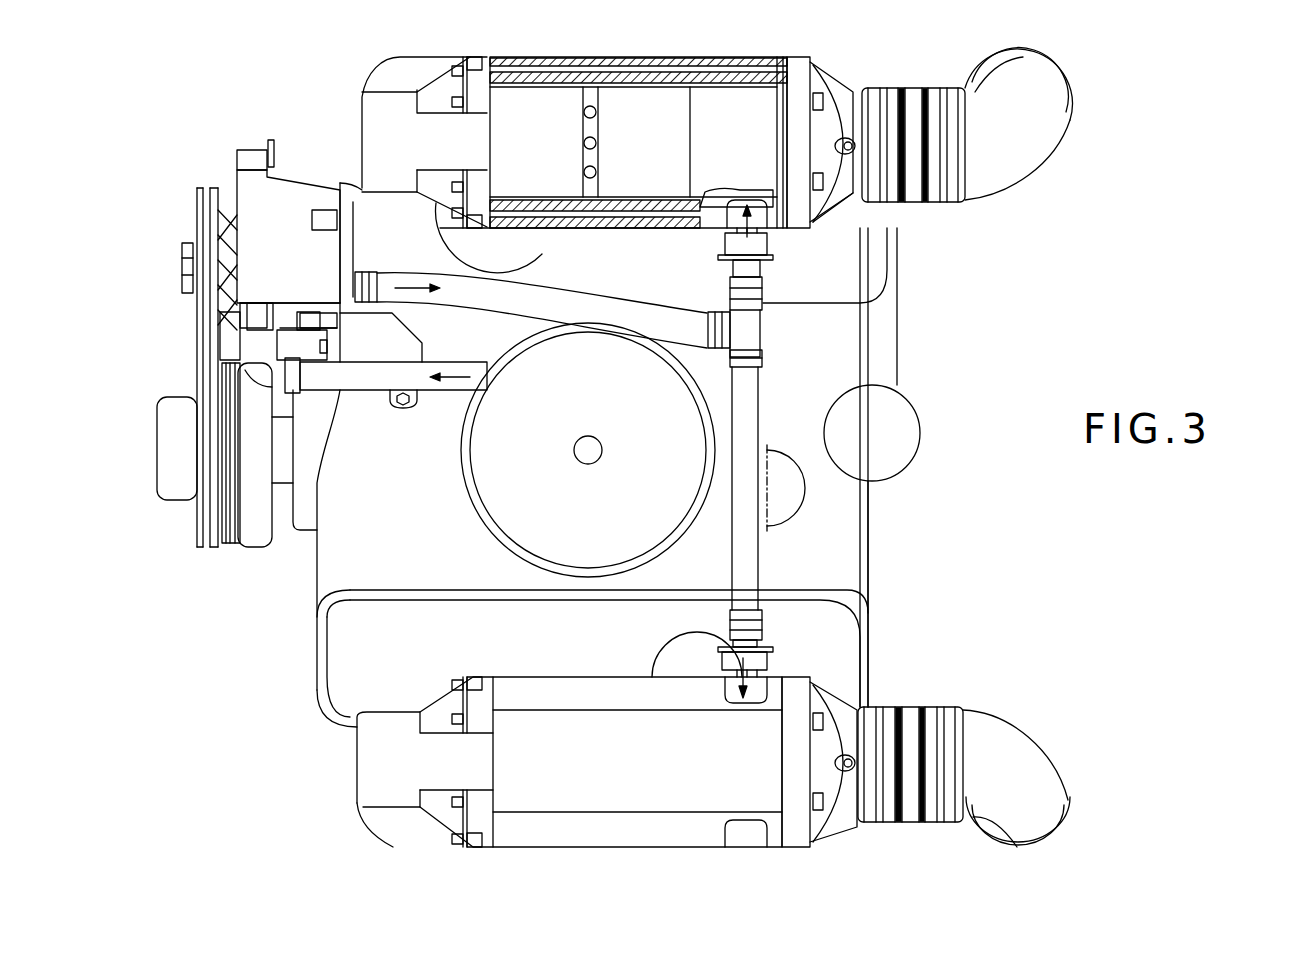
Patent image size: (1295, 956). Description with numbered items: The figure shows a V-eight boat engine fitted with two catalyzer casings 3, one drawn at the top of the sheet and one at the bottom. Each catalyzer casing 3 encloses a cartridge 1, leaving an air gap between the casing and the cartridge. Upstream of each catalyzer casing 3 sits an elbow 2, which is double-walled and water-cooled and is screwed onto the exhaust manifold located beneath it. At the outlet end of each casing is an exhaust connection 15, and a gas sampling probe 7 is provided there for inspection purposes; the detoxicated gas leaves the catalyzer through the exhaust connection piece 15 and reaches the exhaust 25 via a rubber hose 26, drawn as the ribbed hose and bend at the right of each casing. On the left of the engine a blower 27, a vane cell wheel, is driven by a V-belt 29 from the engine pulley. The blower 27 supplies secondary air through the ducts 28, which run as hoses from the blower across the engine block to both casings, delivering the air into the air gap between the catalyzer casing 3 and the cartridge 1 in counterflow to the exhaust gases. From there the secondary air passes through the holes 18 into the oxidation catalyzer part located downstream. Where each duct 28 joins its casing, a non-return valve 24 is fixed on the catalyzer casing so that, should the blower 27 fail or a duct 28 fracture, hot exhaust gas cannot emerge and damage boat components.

The cartridge 1 is at (672, 57).
The elbow 2 is at (373, 117).
The catalyzer casing 3 is at (570, 57).
The gas sampling probe 7 is at (843, 205).
The exhaust connection 15 is at (847, 87).
The holes 18 is at (600, 108).
The non-return valves 24 is at (768, 245).
The exhaust 25 is at (1045, 138).
The rubber hose 26 is at (933, 190).
The blower 27 is at (255, 210).
The ducts 28 is at (487, 303).
The V-belt 29 is at (210, 347).